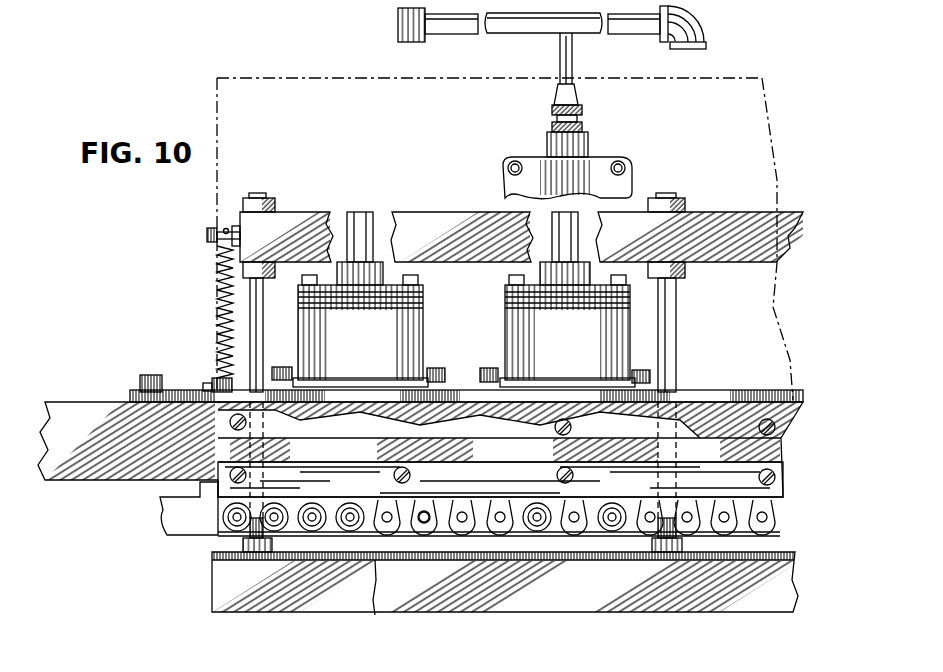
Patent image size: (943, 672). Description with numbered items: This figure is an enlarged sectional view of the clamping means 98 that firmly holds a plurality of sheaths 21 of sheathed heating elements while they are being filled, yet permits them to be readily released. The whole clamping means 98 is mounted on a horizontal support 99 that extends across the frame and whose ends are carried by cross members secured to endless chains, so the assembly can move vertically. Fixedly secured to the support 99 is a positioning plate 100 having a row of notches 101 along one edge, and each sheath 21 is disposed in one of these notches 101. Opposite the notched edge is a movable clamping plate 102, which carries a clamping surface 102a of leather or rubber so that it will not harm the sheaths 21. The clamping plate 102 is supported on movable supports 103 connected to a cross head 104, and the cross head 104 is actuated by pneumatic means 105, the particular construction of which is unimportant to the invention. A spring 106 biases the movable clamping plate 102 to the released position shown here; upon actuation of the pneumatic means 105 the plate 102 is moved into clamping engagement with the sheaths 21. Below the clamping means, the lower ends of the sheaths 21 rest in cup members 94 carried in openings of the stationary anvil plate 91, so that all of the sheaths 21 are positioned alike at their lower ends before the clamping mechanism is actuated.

The sheaths 21 is at (245, 498).
The stationary anvil plate 91 is at (187, 518).
The cup members 94 is at (398, 508).
The clamping means 98 is at (568, 630).
The support 99 is at (90, 410).
The positioning plate 100 is at (687, 463).
The notches 101 is at (652, 498).
The movable clamping plate 102 is at (493, 602).
The clamping surface 102a is at (372, 641).
The movable supports 103 is at (264, 334).
The cross head 104 is at (710, 218).
The pneumatic means 105 is at (505, 316).
The spring 106 is at (215, 292).